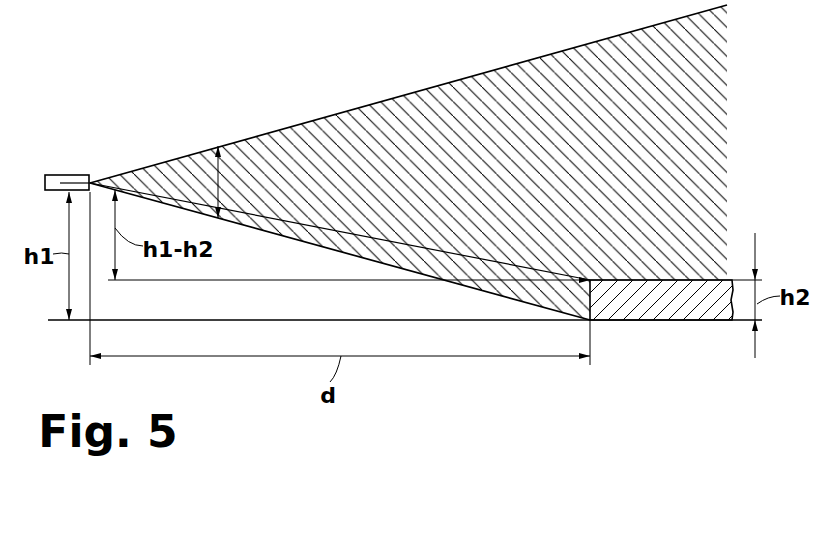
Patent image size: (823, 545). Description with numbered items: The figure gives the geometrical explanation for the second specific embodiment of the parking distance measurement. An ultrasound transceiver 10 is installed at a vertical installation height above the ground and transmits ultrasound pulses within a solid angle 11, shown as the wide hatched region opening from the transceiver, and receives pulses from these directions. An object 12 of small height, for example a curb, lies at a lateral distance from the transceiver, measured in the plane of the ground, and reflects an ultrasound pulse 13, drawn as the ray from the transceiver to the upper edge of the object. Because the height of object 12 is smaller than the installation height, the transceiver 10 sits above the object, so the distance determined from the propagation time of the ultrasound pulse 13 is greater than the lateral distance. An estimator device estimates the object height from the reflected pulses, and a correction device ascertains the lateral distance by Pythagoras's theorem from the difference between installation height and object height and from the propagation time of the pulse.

The ultrasound transceiver 10 is at (57, 175).
The solid angle 11 is at (220, 180).
The object 12 is at (668, 288).
The ultrasound pulse 13 is at (460, 254).